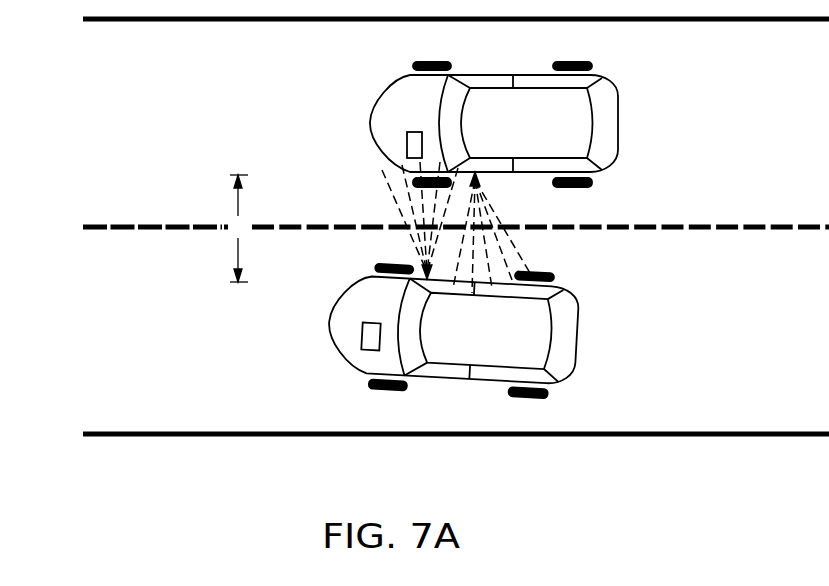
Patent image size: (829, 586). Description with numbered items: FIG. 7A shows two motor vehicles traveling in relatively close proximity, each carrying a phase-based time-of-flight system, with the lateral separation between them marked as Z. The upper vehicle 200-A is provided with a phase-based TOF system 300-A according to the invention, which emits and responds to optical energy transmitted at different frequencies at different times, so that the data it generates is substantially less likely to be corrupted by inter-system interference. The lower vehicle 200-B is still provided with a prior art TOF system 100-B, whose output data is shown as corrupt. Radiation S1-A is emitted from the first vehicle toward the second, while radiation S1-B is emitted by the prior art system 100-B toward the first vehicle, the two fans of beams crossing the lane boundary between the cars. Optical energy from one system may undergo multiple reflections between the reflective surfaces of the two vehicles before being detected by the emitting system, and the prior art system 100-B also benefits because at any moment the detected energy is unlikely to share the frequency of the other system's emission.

The motor vehicle 200-A is at (610, 114).
The phase-based TOF system 300-A is at (407, 152).
The motor vehicle 200-B is at (573, 334).
The phase-based TOF system 100-B is at (367, 333).
The radiation S1-B is at (395, 205).
The radiation S1-A is at (513, 254).
The lateral offset distance between vehicles Z is at (239, 228).